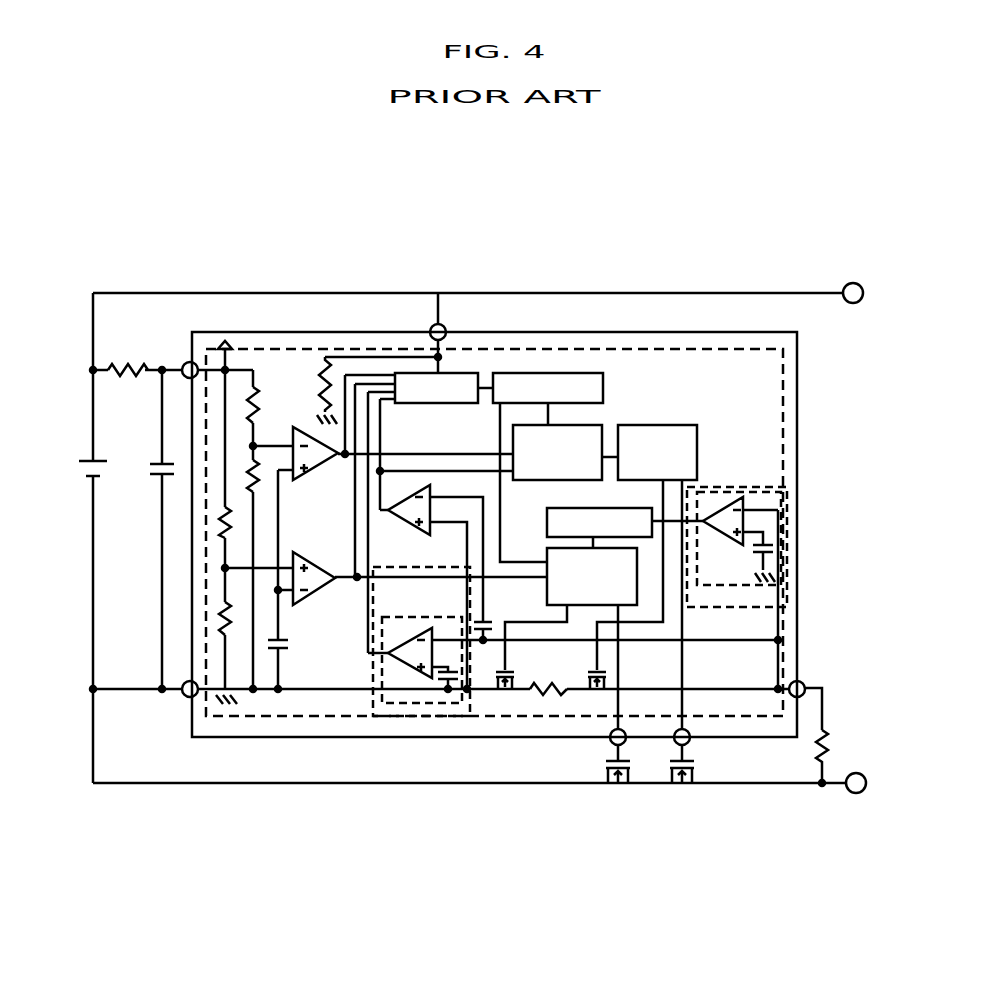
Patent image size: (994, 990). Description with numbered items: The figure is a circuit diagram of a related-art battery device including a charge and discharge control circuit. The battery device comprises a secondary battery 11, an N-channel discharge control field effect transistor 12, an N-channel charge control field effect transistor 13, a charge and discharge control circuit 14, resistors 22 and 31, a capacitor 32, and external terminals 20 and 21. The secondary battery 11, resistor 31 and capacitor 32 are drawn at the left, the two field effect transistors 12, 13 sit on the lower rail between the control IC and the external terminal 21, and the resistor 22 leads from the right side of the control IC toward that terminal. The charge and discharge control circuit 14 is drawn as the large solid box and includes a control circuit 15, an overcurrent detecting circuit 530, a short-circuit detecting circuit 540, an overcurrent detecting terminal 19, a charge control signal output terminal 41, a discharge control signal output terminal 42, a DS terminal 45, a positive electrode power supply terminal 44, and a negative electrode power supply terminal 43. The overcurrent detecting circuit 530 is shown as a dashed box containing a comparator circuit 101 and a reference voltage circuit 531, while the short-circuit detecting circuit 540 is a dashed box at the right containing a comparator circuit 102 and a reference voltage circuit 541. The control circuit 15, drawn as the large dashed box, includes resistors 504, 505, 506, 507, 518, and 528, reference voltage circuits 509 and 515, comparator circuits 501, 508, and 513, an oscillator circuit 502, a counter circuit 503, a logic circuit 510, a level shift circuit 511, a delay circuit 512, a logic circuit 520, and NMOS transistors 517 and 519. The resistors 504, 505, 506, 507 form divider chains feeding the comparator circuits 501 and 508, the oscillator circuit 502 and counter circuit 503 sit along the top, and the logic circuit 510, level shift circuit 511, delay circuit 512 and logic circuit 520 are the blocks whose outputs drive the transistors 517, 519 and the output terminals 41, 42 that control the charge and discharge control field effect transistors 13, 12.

The secondary battery 11 is at (90, 470).
The N-channel discharge control field effect transistor 12 is at (618, 790).
The N-channel charge control field effect transistor 13 is at (683, 790).
The charge and discharge control circuit 14 is at (625, 331).
The control circuit 15 is at (785, 388).
The overcurrent detecting terminal 19 is at (803, 682).
The external terminal 20 is at (855, 283).
The external terminal 21 is at (851, 795).
The resistor 22 is at (830, 745).
The resistor 31 is at (128, 360).
The capacitor 32 is at (152, 472).
The charge control signal output terminal 41 is at (692, 744).
The discharge control signal output terminal 42 is at (612, 744).
The negative electrode power supply terminal 43 is at (186, 700).
The positive electrode power supply terminal 44 is at (190, 362).
The DS terminal 45 is at (437, 325).
The comparator circuit 101 is at (422, 632).
The comparator circuit 102 is at (725, 542).
The comparator circuit 501 is at (302, 425).
The oscillator circuit 502 is at (455, 368).
The counter circuit 503 is at (540, 372).
The resistor 504 is at (243, 393).
The resistor 505 is at (217, 520).
The resistor 506 is at (268, 480).
The resistor 507 is at (217, 615).
The comparator circuit 508 is at (305, 592).
The reference voltage circuit 509 is at (292, 643).
The logic circuit 510 is at (600, 425).
The level shift circuit 511 is at (701, 435).
The delay circuit 512 is at (547, 515).
The comparator circuit 513 is at (407, 520).
The reference voltage circuit 515 is at (475, 626).
The NMOS transistor 517 is at (495, 692).
The resistor 518 is at (540, 694).
The NMOS transistor 519 is at (583, 694).
The logic circuit 520 is at (547, 590).
The resistor 528 is at (330, 356).
The overcurrent detecting circuit 530 is at (395, 704).
The reference voltage circuit 531 is at (446, 683).
The short-circuit detecting circuit 540 is at (787, 495).
The reference voltage circuit 541 is at (778, 545).